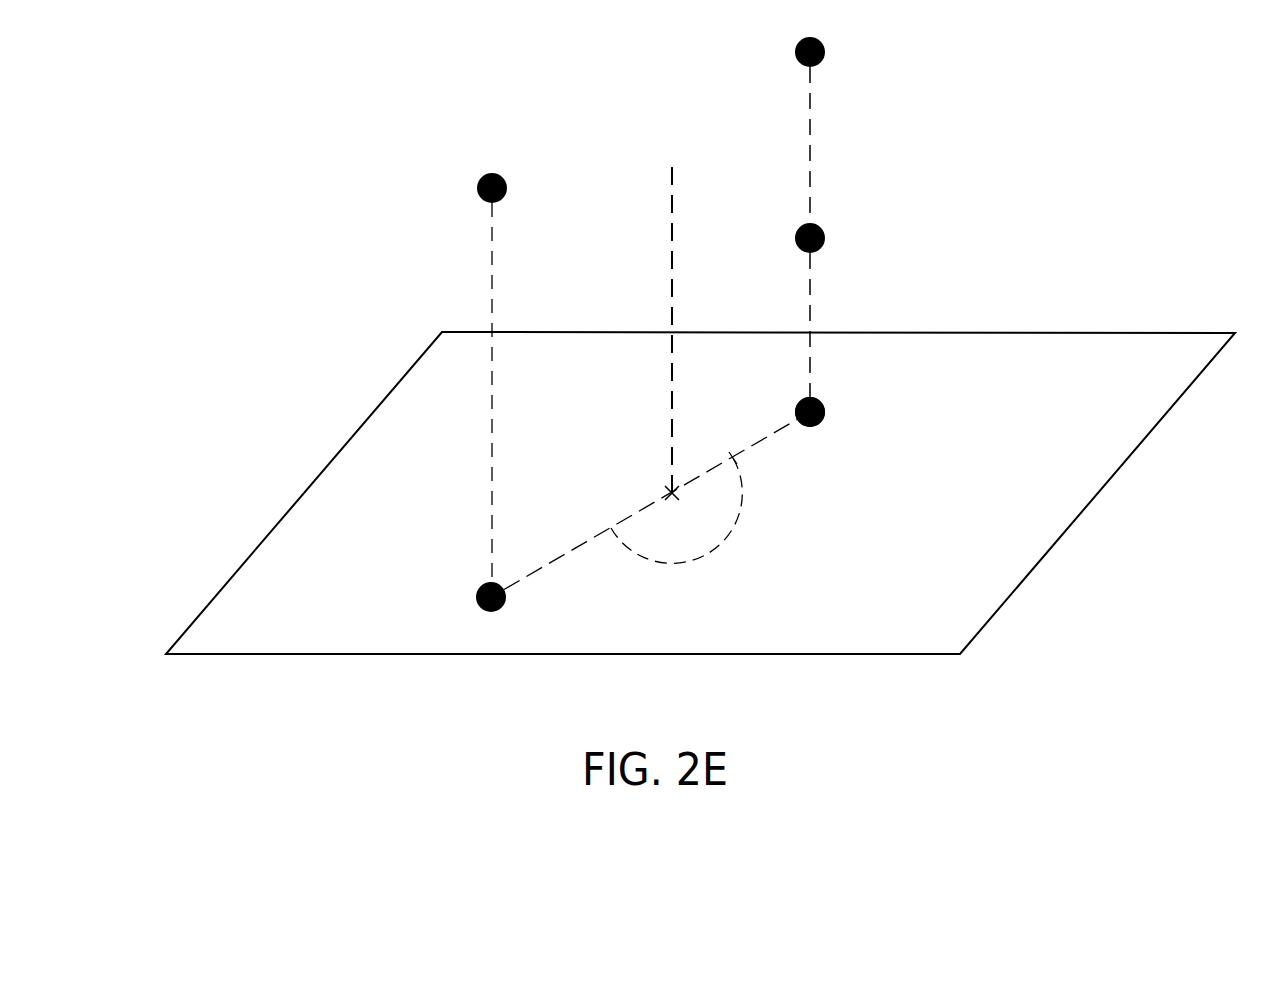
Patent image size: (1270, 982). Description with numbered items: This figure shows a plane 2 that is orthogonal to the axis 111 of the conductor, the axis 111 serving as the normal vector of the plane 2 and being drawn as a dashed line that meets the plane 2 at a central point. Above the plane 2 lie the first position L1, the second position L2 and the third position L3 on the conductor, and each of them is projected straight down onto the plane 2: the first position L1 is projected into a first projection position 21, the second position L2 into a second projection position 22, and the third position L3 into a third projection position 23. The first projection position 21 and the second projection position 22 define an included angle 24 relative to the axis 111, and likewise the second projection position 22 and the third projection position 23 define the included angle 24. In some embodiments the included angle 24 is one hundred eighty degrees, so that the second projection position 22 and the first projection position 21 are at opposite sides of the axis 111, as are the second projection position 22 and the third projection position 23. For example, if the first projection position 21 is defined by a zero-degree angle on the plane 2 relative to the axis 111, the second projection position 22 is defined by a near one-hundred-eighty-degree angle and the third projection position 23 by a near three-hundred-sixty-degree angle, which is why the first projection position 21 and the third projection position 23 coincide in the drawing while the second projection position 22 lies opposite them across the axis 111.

The plane 2 is at (1163, 331).
The axis of the conductor 111 is at (670, 313).
The first position L1 is at (823, 238).
The second position L2 is at (478, 190).
The third position L3 is at (822, 44).
The first projection position 21 is at (825, 407).
The second projection position 22 is at (480, 607).
The third projection position 23 is at (874, 396).
The included angle 24 is at (745, 538).